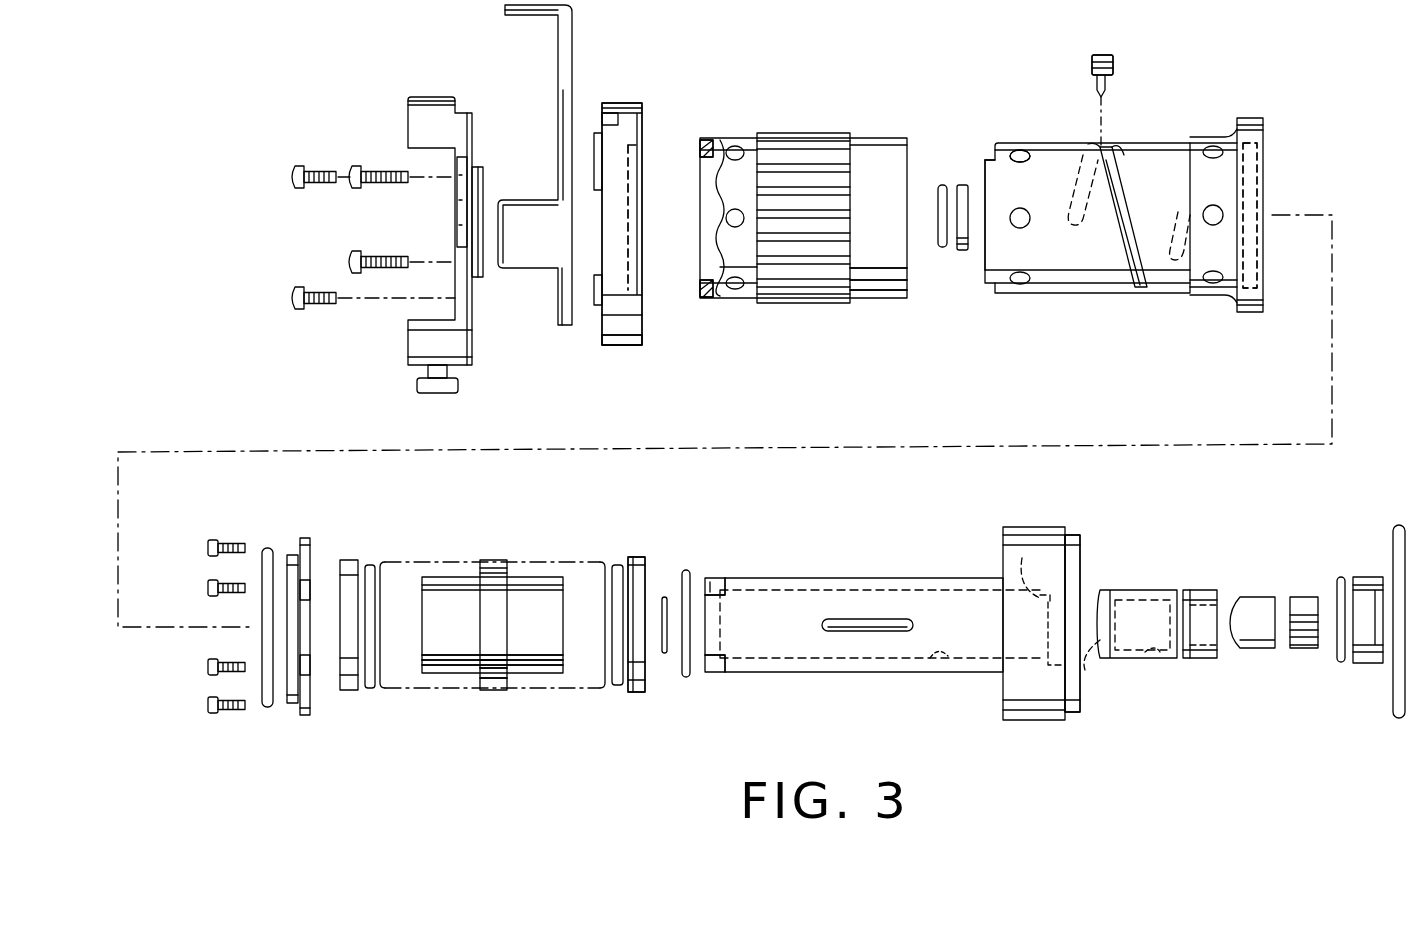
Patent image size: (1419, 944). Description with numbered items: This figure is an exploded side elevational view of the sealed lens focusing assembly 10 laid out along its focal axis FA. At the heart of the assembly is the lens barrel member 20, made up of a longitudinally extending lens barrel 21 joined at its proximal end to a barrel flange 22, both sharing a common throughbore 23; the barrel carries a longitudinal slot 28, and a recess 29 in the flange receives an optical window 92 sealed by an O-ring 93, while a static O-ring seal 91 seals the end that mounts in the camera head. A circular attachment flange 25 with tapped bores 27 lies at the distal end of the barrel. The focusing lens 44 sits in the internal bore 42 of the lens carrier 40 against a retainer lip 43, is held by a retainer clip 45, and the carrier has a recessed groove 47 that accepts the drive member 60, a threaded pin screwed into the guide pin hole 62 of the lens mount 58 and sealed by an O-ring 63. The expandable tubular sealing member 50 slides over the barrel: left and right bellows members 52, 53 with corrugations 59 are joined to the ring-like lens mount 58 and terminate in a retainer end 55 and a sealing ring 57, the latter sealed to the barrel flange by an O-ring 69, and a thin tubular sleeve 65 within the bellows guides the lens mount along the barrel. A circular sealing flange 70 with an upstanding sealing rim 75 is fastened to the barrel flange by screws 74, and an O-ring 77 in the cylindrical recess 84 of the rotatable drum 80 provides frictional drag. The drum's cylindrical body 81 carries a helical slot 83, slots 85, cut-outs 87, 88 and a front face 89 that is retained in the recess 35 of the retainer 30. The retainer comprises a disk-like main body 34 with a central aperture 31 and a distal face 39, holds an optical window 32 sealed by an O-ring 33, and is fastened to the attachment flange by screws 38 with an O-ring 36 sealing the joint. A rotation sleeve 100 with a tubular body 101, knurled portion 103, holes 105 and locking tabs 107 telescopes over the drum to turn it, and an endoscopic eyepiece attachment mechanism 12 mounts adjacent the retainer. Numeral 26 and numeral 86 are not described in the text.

The lens focusing assembly 10 is at (1392, 250).
The endoscopic eyepiece attachment mechanism 12 is at (408, 392).
The lens barrel member 20 is at (936, 602).
The lens barrel 21 is at (790, 672).
The barrel flange 22 is at (1030, 527).
The throughbore 23 is at (945, 660).
The circular attachment flange 25 is at (708, 655).
The hub 26 is at (1083, 705).
The tapped bores 27 is at (693, 575).
The longitudinal slot 28 is at (880, 620).
The recess 29 is at (1045, 596).
The retainer member 30 is at (648, 92).
The central aperture 31 is at (457, 226).
The optical window 32 is at (962, 250).
The O-ring 33 is at (943, 185).
The main body 34 is at (632, 340).
The recess 35 is at (670, 135).
The O-ring 36 is at (664, 597).
The screws 38 is at (351, 257).
The distal face 39 is at (603, 108).
The lens carrier 40 is at (1135, 590).
The internal bore 42 is at (1153, 655).
The retainer ring or lip 43 is at (1085, 670).
The focusing lens 44 is at (1258, 597).
The retainer clip 45 is at (1310, 597).
The recessed groove 47 is at (1190, 590).
The expandable tubular sealing member 50 is at (492, 638).
The left bellows member 52 is at (405, 690).
The right bellows member 53 is at (580, 562).
The retainer end 55 is at (352, 690).
The sealing ring 57 is at (640, 694).
The lens mount 58 is at (490, 690).
The corrugations 59 is at (370, 565).
The drive member 60 is at (1108, 55).
The guide pin hole 62 is at (493, 560).
The O-ring 63 is at (1113, 68).
The tubular sleeve 65 is at (537, 655).
The O-ring 69 is at (686, 570).
The sealing flange 70 is at (305, 538).
The screws 74 is at (208, 588).
The sealing rim 75 is at (292, 555).
The O-ring 77 is at (270, 548).
The rotatable drum 80 is at (1163, 202).
The cylindrical body 81 is at (1163, 143).
The helical slot 83 is at (1143, 290).
The cylindrical recess 84 is at (1265, 148).
The slots 85 is at (1005, 152).
The flange 86 is at (1238, 120).
The cut-outs 87 is at (1220, 212).
The cut-outs 88 is at (1025, 150).
The front face 89 is at (985, 180).
The static O-ring seal 91 is at (1398, 525).
The optical window 92 is at (1376, 580).
The O-ring 93 is at (1341, 662).
The rotation sleeve 100 is at (873, 116).
The tubular body 101 is at (870, 292).
The knurled portion 103 is at (812, 133).
The holes 105 is at (738, 150).
The locking tabs 107 is at (702, 142).
The focal axis FA is at (170, 630).